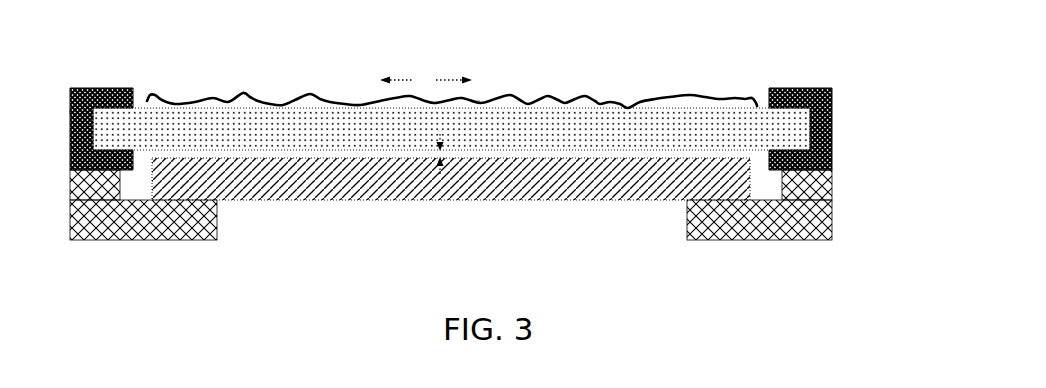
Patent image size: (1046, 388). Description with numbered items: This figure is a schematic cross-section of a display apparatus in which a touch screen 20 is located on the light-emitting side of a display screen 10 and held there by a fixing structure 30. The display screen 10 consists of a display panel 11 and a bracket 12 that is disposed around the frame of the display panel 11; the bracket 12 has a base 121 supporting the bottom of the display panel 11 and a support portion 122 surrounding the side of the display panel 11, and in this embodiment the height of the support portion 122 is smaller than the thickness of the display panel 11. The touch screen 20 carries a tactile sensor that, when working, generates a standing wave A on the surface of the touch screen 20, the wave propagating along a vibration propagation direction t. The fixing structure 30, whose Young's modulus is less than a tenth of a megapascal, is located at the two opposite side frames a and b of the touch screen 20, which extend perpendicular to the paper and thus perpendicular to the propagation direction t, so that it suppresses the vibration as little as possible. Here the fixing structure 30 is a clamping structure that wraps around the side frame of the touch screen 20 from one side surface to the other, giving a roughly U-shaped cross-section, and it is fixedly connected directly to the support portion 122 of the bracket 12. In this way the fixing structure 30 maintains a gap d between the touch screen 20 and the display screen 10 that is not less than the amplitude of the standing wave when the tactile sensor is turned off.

The display screen 10 is at (518, 201).
The display panel 11 is at (751, 178).
The bracket 12 is at (498, 205).
The base 121 is at (833, 229).
The support portion 122 is at (835, 196).
The touch screen 20 is at (567, 100).
The fixing structure 30 is at (834, 112).
The side frame a is at (69, 112).
The side frame b is at (833, 138).
The standing wave A is at (475, 100).
The vibration propagation direction t is at (426, 80).
The gap d is at (449, 154).